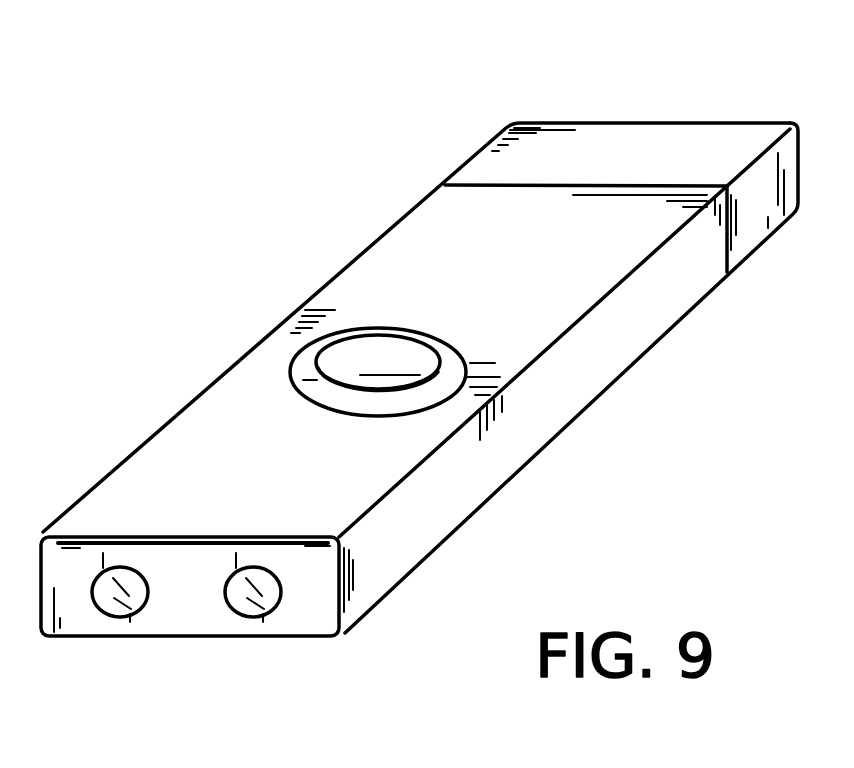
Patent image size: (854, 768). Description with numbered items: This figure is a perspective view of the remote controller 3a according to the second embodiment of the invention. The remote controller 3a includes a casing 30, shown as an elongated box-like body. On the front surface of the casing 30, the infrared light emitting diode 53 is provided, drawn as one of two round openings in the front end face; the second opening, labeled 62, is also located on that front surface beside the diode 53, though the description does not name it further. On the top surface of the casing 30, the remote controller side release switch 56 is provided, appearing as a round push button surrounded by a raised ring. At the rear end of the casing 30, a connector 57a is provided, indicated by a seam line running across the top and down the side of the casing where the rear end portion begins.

The remote controller 3a is at (347, 94).
The casing 30 is at (345, 268).
The connector 57a is at (680, 87).
The remote controller side release switch 56 is at (410, 357).
The opening 62 is at (118, 603).
The infrared light emitting diode 53 is at (253, 601).